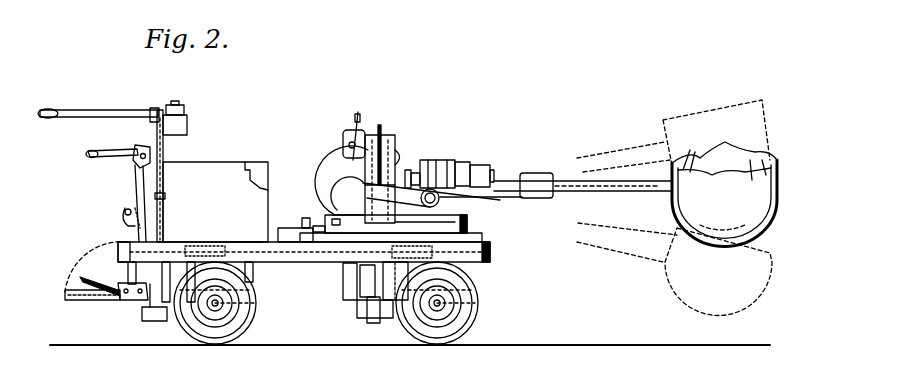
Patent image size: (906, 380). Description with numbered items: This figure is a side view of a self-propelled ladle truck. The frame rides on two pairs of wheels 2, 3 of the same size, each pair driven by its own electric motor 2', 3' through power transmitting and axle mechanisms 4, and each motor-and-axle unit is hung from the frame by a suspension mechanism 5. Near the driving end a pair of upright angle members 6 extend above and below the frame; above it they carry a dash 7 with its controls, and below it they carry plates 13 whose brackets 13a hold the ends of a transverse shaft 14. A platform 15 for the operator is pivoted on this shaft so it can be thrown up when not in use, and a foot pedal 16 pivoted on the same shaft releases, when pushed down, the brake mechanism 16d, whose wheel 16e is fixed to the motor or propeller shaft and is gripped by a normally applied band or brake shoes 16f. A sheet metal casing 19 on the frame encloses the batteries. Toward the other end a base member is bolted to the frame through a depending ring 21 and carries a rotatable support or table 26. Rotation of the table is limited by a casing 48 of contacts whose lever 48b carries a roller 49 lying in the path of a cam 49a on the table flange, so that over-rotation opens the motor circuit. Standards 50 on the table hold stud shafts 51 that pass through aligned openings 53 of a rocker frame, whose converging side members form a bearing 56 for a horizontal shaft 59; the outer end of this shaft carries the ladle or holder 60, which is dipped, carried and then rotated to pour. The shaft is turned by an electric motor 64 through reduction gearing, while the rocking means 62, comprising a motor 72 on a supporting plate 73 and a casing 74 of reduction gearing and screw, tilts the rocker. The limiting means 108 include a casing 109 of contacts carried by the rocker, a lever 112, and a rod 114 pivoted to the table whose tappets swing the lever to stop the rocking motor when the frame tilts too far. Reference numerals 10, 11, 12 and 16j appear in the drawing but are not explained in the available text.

The wheels 2 is at (215, 303).
The electric motor 2' is at (255, 270).
The wheels 3 is at (439, 303).
The electric motor 3' is at (412, 251).
The power transmitting and axle mechanisms 4 is at (260, 312).
The suspension mechanism 5 is at (212, 246).
The upright angle members 6 is at (165, 195).
The dash 7 is at (164, 158).
The steering handle bracket 10 is at (188, 123).
The lever hook 11 is at (120, 215).
The control lever 12 is at (120, 150).
The plates 13 is at (122, 266).
The brackets 13a is at (128, 285).
The transverse rod or shaft 14 is at (120, 300).
The platform 15 is at (74, 301).
The foot pedal 16 is at (322, 287).
The brake mechanism 16d is at (360, 310).
The wheel 16e is at (320, 281).
The band or brake shoes 16f is at (297, 268).
The axle housing 16j is at (352, 290).
The sheet metal casing 19 is at (218, 162).
The depending ring 21 is at (338, 243).
The support or table 26 is at (468, 220).
The casing 48 is at (294, 227).
The lever 48b is at (304, 218).
The roller 49 is at (318, 226).
The tappet or cam 49a is at (396, 224).
The standards 50 is at (445, 208).
The stud shafts 51 is at (440, 198).
The aligned openings 53 is at (388, 137).
The bearing 56 is at (538, 173).
The rod or shaft 59 is at (620, 176).
The material carrying element or holder 60 is at (768, 160).
The rocking means 62 is at (413, 169).
The electric motor 64 is at (462, 162).
The motor 72 is at (437, 165).
The supporting plate 73 is at (492, 198).
The casing 74 is at (483, 166).
The limiting means 108 is at (343, 140).
The casing 109 is at (338, 129).
The lever 112 is at (346, 155).
The rod 114 is at (360, 118).